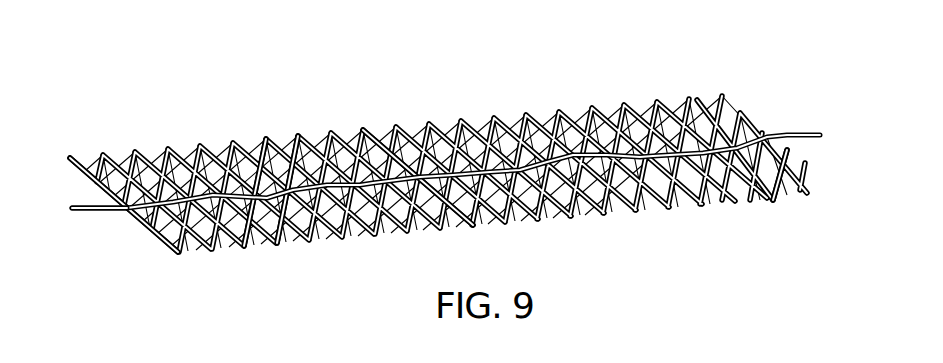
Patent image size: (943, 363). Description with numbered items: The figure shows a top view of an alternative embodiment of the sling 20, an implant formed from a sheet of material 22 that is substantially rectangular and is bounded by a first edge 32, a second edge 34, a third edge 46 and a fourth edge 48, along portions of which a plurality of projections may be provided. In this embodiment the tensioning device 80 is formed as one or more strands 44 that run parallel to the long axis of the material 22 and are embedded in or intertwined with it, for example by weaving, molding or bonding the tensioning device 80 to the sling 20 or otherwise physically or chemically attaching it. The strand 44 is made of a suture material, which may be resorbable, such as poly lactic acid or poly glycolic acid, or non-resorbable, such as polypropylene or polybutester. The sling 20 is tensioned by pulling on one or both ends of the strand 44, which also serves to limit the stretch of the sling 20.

The sling 20 is at (499, 101).
The material 22 is at (372, 130).
The first edge 32 is at (257, 140).
The second edge 34 is at (257, 232).
The strand 44 is at (80, 212).
The third edge 46 is at (172, 253).
The fourth edge 48 is at (777, 200).
The tensioning device 80 is at (811, 130).